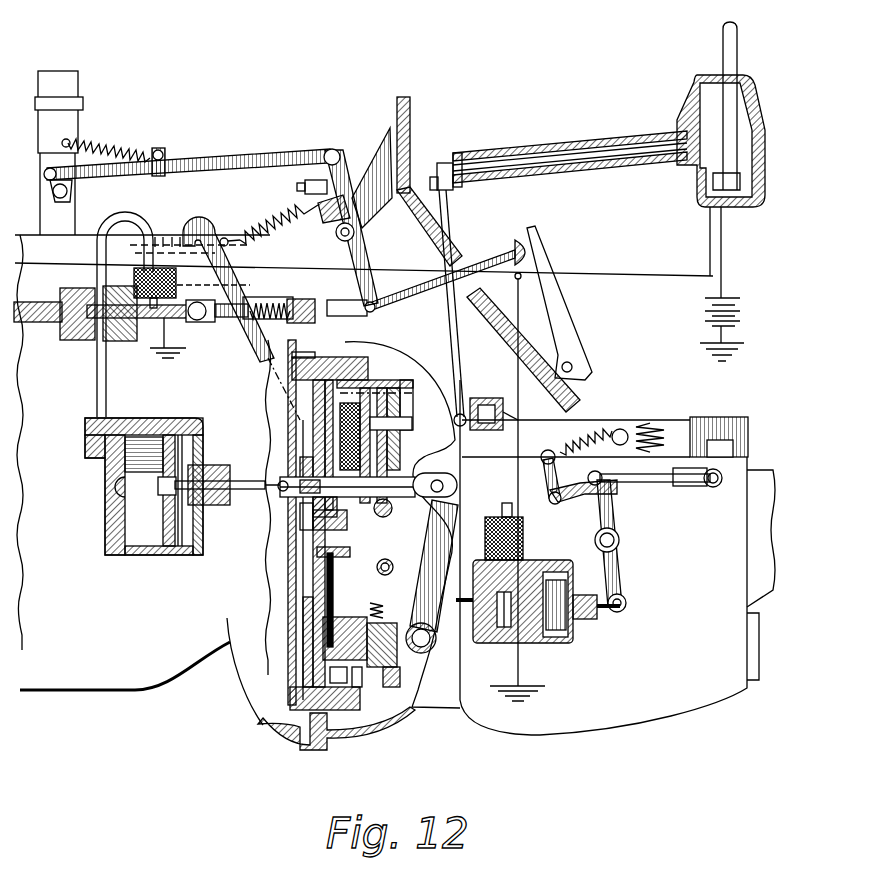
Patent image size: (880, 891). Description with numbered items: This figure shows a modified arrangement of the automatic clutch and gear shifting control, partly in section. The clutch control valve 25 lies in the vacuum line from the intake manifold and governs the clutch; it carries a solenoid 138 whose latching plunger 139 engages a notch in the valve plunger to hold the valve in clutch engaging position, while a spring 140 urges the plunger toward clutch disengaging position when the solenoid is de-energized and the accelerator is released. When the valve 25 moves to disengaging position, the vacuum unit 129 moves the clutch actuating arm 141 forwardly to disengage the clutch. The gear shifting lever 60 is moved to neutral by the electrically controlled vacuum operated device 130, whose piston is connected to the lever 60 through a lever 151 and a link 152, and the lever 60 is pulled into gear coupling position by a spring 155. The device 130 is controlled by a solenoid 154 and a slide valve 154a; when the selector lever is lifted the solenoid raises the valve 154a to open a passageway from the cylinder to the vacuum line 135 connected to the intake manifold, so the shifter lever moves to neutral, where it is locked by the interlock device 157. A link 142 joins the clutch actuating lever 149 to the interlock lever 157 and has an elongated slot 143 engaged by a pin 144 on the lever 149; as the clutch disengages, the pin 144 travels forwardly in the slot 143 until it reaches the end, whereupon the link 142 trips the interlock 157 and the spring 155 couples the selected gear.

The control valve 25 is at (78, 341).
The gear shifting lever 60 is at (722, 480).
The vacuum unit 129 is at (163, 556).
The electrically controlled vacuum operated device 130 is at (553, 648).
The vacuum line 135 is at (262, 350).
The solenoid 138 is at (134, 280).
The latching plunger 139 is at (156, 350).
The spring 140 is at (283, 298).
The clutch actuating arm 141 is at (457, 540).
The link 142 is at (497, 432).
The elongated slot 143 is at (428, 478).
The pin 144 is at (488, 321).
The clutch actuating lever 149 is at (455, 503).
The lever 151 is at (622, 568).
The link 152 is at (632, 482).
The solenoid 154 is at (523, 532).
The slide valve 154a is at (503, 640).
The spring 155 is at (652, 416).
The interlock device 157 is at (582, 498).